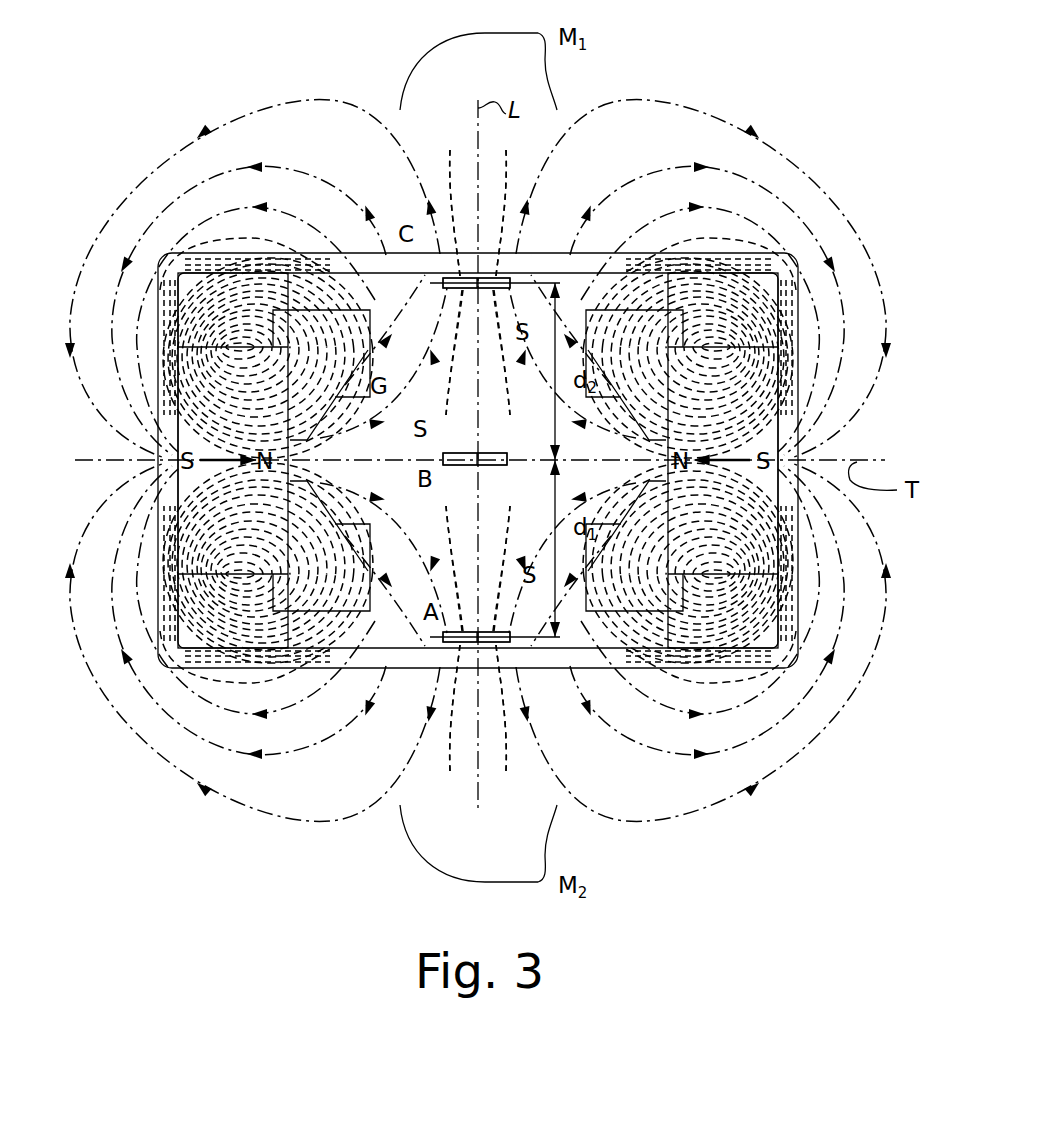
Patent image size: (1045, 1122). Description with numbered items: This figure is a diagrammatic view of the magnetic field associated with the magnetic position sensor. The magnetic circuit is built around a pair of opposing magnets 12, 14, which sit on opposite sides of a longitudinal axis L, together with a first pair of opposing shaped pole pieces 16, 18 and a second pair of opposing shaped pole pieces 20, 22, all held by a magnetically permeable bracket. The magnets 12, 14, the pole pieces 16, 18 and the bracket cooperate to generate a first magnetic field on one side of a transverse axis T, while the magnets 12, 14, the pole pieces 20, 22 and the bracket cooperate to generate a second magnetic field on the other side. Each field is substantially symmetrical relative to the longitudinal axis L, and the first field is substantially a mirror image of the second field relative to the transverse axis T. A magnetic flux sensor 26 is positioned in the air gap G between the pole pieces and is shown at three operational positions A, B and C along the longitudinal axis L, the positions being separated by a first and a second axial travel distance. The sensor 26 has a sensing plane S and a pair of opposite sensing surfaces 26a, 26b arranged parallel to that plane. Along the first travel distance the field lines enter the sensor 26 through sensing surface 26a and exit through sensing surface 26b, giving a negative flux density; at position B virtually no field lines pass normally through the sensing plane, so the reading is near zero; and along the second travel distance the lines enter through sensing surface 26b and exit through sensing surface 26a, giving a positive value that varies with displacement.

The magnet 12 is at (211, 576).
The magnet 14 is at (747, 575).
The pole piece 16 is at (318, 307).
The pole piece 18 is at (623, 307).
The pole piece 20 is at (288, 572).
The pole piece 22 is at (650, 610).
The magnetic flux sensor 26 is at (496, 276).
The sensing surface 26a is at (488, 452).
The sensing surface 26b is at (462, 497).